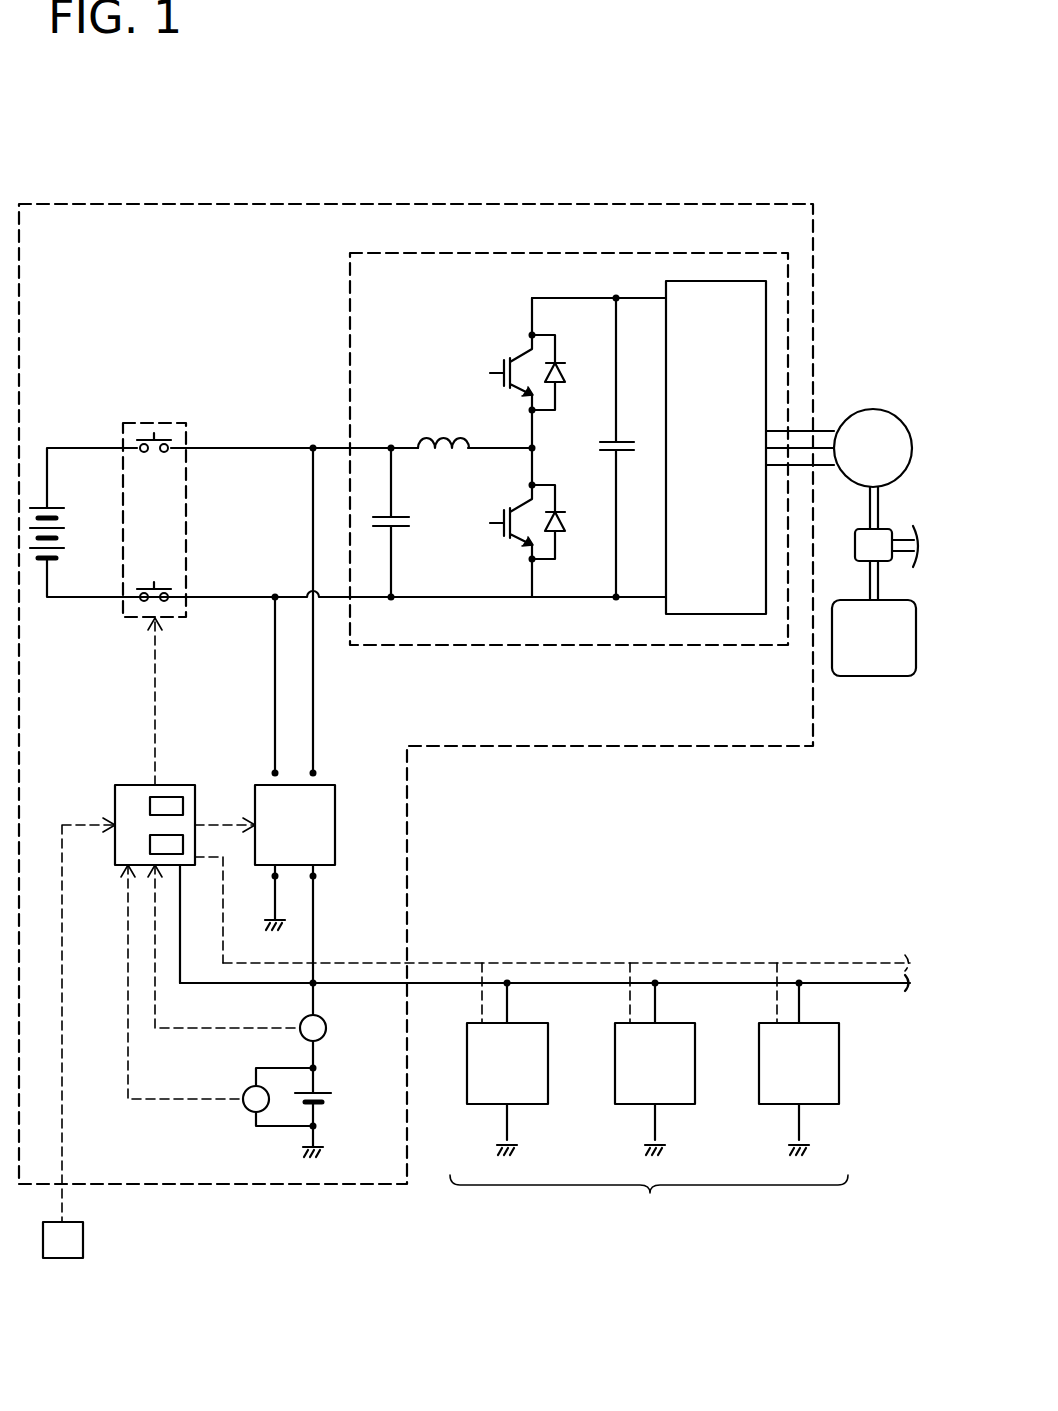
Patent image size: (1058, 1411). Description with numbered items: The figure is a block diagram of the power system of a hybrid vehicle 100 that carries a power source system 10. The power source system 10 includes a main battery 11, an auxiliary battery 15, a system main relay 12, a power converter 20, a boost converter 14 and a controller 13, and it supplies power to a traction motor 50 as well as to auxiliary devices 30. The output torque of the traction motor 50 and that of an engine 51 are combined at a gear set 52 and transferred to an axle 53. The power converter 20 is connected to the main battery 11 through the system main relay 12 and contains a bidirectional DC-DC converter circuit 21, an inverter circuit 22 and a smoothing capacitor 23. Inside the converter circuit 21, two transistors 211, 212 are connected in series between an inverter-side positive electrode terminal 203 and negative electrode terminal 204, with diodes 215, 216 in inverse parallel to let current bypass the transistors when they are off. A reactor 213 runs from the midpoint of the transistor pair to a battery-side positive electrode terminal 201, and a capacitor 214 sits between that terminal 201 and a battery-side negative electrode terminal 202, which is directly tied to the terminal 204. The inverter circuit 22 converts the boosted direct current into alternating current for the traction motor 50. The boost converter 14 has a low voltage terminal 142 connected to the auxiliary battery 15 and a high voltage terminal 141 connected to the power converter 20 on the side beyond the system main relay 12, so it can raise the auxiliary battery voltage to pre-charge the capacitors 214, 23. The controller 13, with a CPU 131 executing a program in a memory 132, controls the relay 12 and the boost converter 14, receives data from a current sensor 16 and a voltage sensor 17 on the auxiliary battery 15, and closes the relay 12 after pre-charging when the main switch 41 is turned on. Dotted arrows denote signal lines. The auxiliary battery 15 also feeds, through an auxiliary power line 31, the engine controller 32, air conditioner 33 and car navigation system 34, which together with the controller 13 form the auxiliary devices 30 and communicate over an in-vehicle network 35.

The hybrid vehicle 100 is at (795, 150).
The power source system 10 is at (172, 203).
The main battery 11 is at (60, 505).
The system main relay 12 is at (150, 422).
The controller 13 is at (125, 785).
The CPU 131 is at (168, 797).
The memory 132 is at (178, 835).
The boost converter 14 is at (335, 810).
The high voltage terminal 141 is at (316, 770).
The low voltage terminal 142 is at (316, 878).
The auxiliary battery 15 is at (330, 1093).
The current sensor 16 is at (327, 1026).
The voltage sensor 17 is at (245, 1112).
The power converter 20 is at (348, 305).
The bidirectional DC-DC converter circuit 21 is at (428, 330).
The battery-side positive electrode terminal 201 is at (388, 445).
The battery-side negative electrode terminal 202 is at (391, 600).
The positive electrode terminal 203 is at (613, 296).
The negative electrode terminal 204 is at (616, 600).
The transistor 211 is at (495, 372).
The transistor 212 is at (495, 522).
The reactor 213 is at (438, 437).
The capacitor 214 is at (400, 529).
The diode 215 is at (560, 362).
The diode 216 is at (561, 512).
The inverter circuit 22 is at (698, 618).
The capacitor 23 is at (622, 440).
The auxiliary devices 30 is at (649, 1198).
The auxiliary power line 31 is at (848, 987).
The engine controller 32 is at (548, 1063).
The air conditioner 33 is at (695, 1063).
The car navigation system 34 is at (839, 1063).
The in-vehicle network 35 is at (810, 963).
The main switch 41 is at (66, 1260).
The traction motor 50 is at (873, 410).
The engine 51 is at (878, 680).
The gear set 52 is at (855, 545).
The axle 53 is at (898, 540).